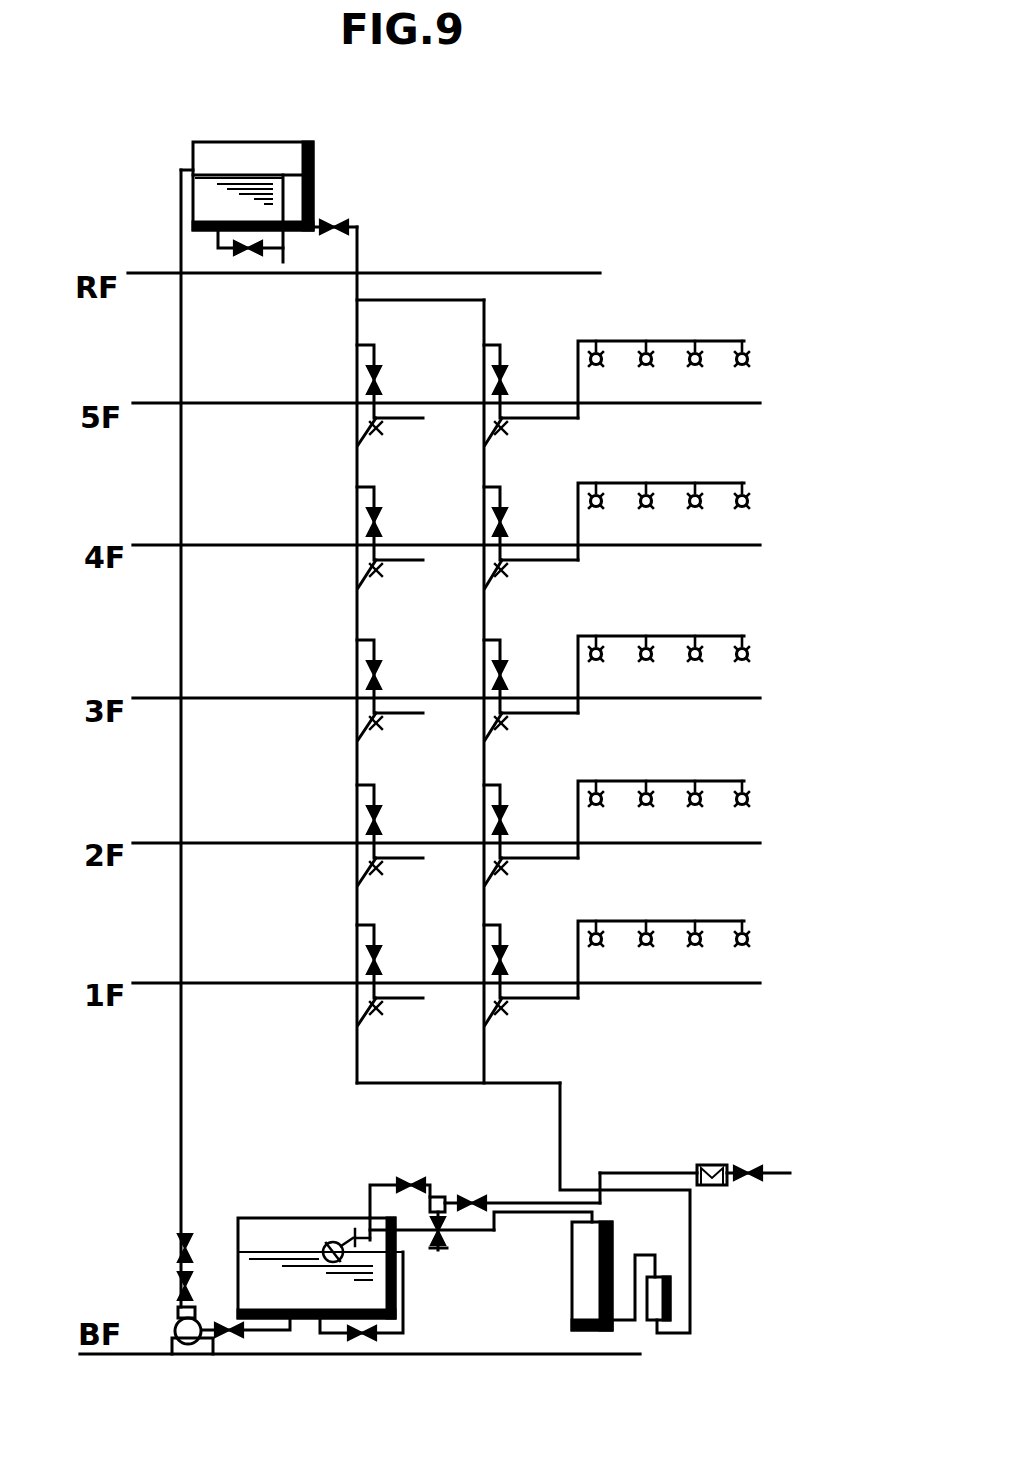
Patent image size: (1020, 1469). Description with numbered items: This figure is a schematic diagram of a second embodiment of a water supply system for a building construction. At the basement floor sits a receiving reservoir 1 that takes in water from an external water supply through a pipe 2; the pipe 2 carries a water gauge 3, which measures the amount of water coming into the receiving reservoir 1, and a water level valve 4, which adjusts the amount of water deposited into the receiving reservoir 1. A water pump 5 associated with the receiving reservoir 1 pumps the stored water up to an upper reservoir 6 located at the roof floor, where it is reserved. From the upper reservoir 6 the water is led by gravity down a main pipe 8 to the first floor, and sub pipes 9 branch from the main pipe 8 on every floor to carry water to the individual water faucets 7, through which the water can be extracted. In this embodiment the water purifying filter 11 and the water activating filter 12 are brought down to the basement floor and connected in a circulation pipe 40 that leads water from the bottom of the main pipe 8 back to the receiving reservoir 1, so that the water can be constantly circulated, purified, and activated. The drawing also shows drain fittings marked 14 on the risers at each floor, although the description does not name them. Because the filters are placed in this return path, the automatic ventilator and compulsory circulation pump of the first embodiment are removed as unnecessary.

The receiving reservoir 1 is at (380, 1312).
The pipe 2 is at (600, 1195).
The water gauge 3 is at (707, 1185).
The water level valve 4 is at (438, 1197).
The water pump 5 is at (177, 1326).
The upper reservoir 6 is at (222, 142).
The water faucets 7 is at (749, 361).
The main pipe 8 is at (357, 615).
The sub pipes 9 is at (560, 418).
The water purifying filter 11 is at (648, 1322).
The water activating filter 12 is at (572, 1290).
The drain valve 14 is at (492, 443).
The circulation pipe 40 is at (562, 1115).